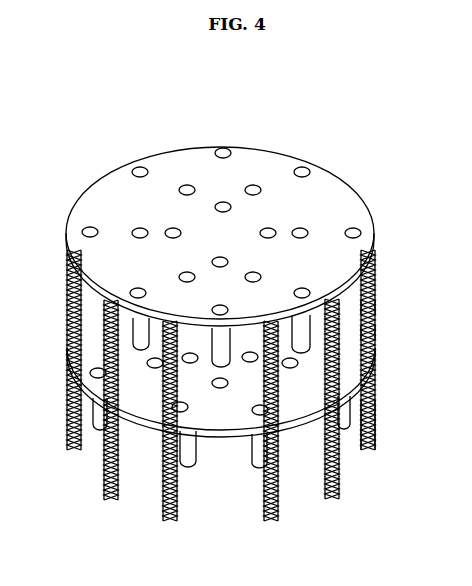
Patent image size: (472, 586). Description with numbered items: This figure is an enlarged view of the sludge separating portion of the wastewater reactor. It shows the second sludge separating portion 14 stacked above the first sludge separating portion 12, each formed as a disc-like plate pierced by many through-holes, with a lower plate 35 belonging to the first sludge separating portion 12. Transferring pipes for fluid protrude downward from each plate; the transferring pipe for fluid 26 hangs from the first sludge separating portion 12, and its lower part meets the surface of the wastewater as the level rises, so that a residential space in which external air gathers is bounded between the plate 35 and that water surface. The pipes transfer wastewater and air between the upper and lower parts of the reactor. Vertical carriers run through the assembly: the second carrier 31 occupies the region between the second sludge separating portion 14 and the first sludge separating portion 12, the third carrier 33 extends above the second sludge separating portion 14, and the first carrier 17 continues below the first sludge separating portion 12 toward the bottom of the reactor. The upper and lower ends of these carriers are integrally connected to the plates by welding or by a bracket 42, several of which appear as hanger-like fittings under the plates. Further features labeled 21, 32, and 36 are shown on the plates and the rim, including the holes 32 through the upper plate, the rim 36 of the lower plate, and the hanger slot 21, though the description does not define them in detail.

The first sludge separating portion 12 is at (353, 347).
The second sludge separating portion 14 is at (353, 185).
The first carrier 17 is at (380, 428).
The hanger slot 21 is at (345, 372).
The transferring pipe for fluid 26 is at (362, 212).
The second carrier 31 is at (375, 288).
The hole 32 is at (303, 160).
The third carrier 33 is at (377, 308).
The plate 35 is at (375, 332).
The lower plate rim 36 is at (377, 397).
The bracket 42 is at (67, 350).